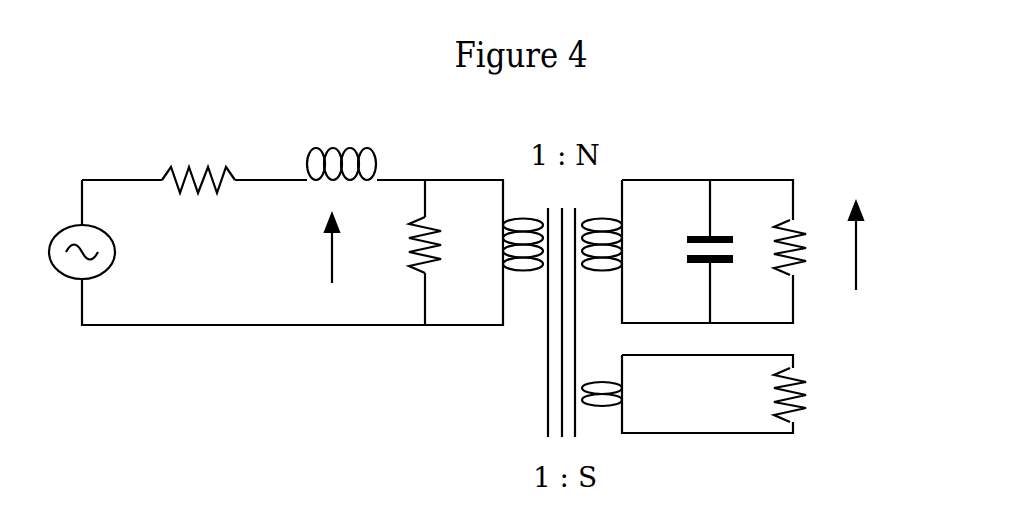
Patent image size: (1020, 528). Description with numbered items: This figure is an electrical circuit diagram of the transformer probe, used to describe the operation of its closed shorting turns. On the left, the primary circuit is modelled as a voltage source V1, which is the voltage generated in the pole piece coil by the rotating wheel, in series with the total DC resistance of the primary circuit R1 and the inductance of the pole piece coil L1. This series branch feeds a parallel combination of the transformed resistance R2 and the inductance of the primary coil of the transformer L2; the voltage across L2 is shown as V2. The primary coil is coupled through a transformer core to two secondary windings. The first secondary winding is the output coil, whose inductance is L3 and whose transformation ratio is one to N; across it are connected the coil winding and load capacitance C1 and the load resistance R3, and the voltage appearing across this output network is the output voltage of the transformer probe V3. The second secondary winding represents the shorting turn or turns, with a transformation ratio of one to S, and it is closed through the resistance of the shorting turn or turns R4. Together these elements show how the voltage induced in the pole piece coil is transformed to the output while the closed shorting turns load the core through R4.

The total DC resistance of the primary circuit R1 is at (198, 154).
The inductance of the pole piece coil L1 is at (341, 144).
The voltage generated in the pole piece coil V1 is at (108, 252).
The voltage across L2 V2 is at (310, 248).
The transformed resistance R2 is at (397, 252).
The inductance of the primary coil L2 is at (500, 249).
The inductance of the output coil L3 is at (621, 246).
The coil winding and load capacitance C1 is at (703, 251).
The load resistance R3 is at (810, 248).
The output voltage of the transformer probe V3 is at (877, 246).
The resistance of the shorting turn or turns R4 is at (815, 395).